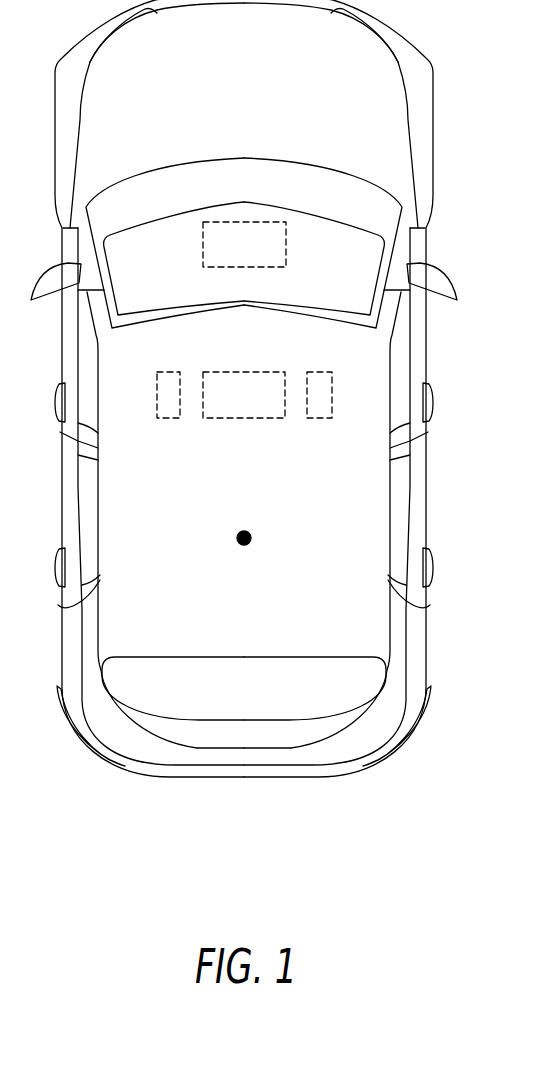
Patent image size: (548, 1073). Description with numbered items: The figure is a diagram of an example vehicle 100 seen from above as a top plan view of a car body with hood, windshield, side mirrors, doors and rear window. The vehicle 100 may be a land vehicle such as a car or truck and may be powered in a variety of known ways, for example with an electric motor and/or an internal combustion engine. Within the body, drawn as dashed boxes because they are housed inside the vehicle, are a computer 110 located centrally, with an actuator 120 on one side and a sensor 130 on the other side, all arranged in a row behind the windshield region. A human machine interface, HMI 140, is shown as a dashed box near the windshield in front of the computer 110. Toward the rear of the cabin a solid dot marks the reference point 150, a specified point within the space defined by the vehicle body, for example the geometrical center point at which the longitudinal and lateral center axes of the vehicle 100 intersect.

The vehicle 100 is at (250, 620).
The computer 110 is at (268, 418).
The actuator 120 is at (172, 418).
The sensor 130 is at (312, 418).
The human machine interface 140 is at (236, 222).
The reference point 150 is at (251, 541).